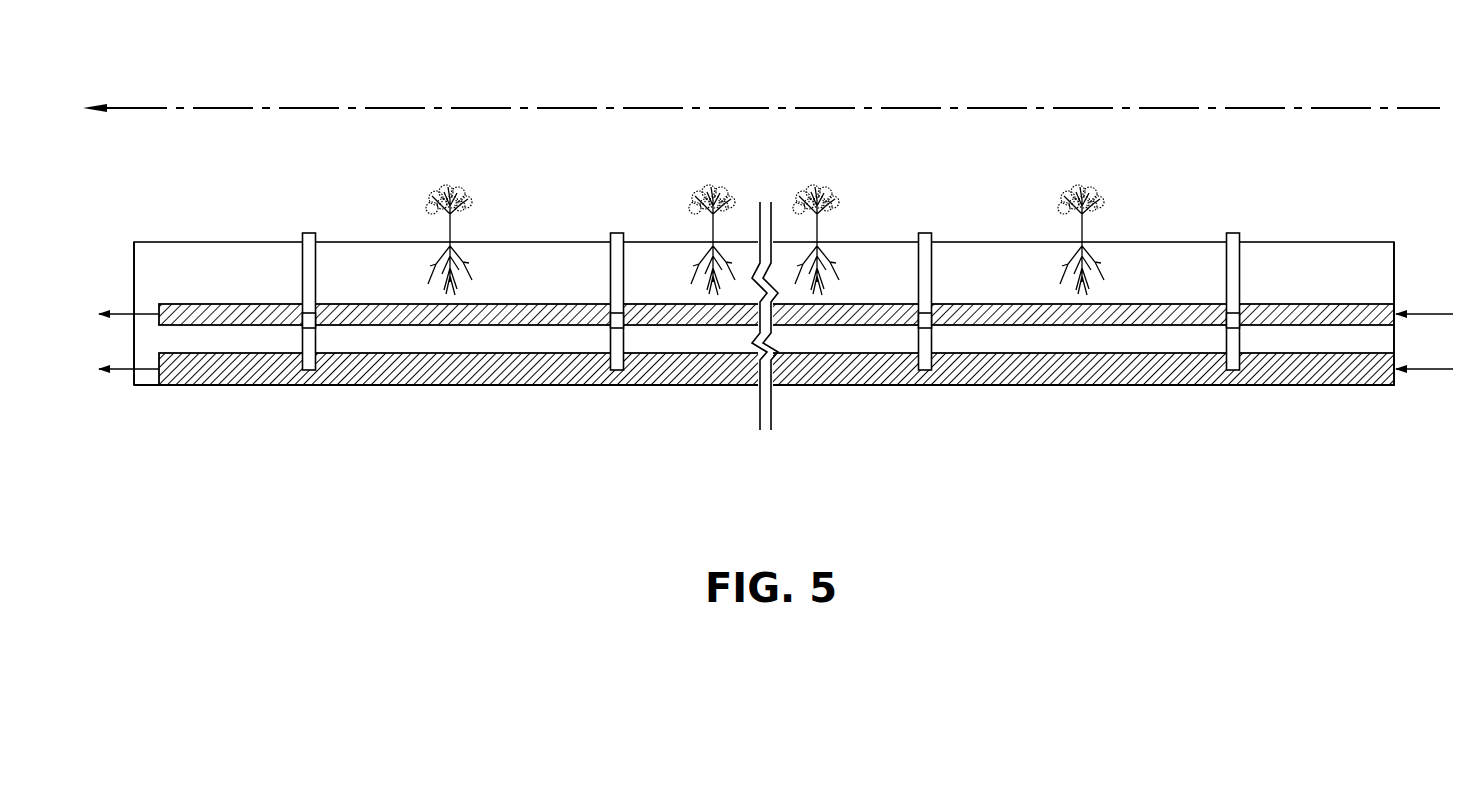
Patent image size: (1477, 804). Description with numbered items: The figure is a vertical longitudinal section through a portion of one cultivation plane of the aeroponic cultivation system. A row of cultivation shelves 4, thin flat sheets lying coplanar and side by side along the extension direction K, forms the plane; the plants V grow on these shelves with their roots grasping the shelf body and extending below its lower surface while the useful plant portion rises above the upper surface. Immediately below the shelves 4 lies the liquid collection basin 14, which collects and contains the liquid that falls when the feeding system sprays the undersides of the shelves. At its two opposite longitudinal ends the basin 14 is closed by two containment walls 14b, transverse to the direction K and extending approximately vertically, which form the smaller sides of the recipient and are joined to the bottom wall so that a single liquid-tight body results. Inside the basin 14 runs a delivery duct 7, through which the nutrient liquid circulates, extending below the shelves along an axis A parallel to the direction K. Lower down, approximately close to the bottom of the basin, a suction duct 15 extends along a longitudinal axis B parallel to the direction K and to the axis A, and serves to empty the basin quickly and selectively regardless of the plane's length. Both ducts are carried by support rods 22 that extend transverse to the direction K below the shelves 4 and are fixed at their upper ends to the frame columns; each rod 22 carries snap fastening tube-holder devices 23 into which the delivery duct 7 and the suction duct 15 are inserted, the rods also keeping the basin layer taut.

The cultivation shelf 4 is at (272, 242).
The delivery duct 7 is at (890, 305).
The liquid collection basin 14 is at (478, 390).
The containment wall 14b is at (132, 263).
The suction duct 15 is at (1095, 380).
The support rod 22 is at (313, 262).
The tube-holder device 23 is at (316, 330).
The plants V is at (470, 200).
The extension direction K is at (220, 108).
The axis of delivery duct A is at (125, 306).
The longitudinal axis of suction duct B is at (123, 376).